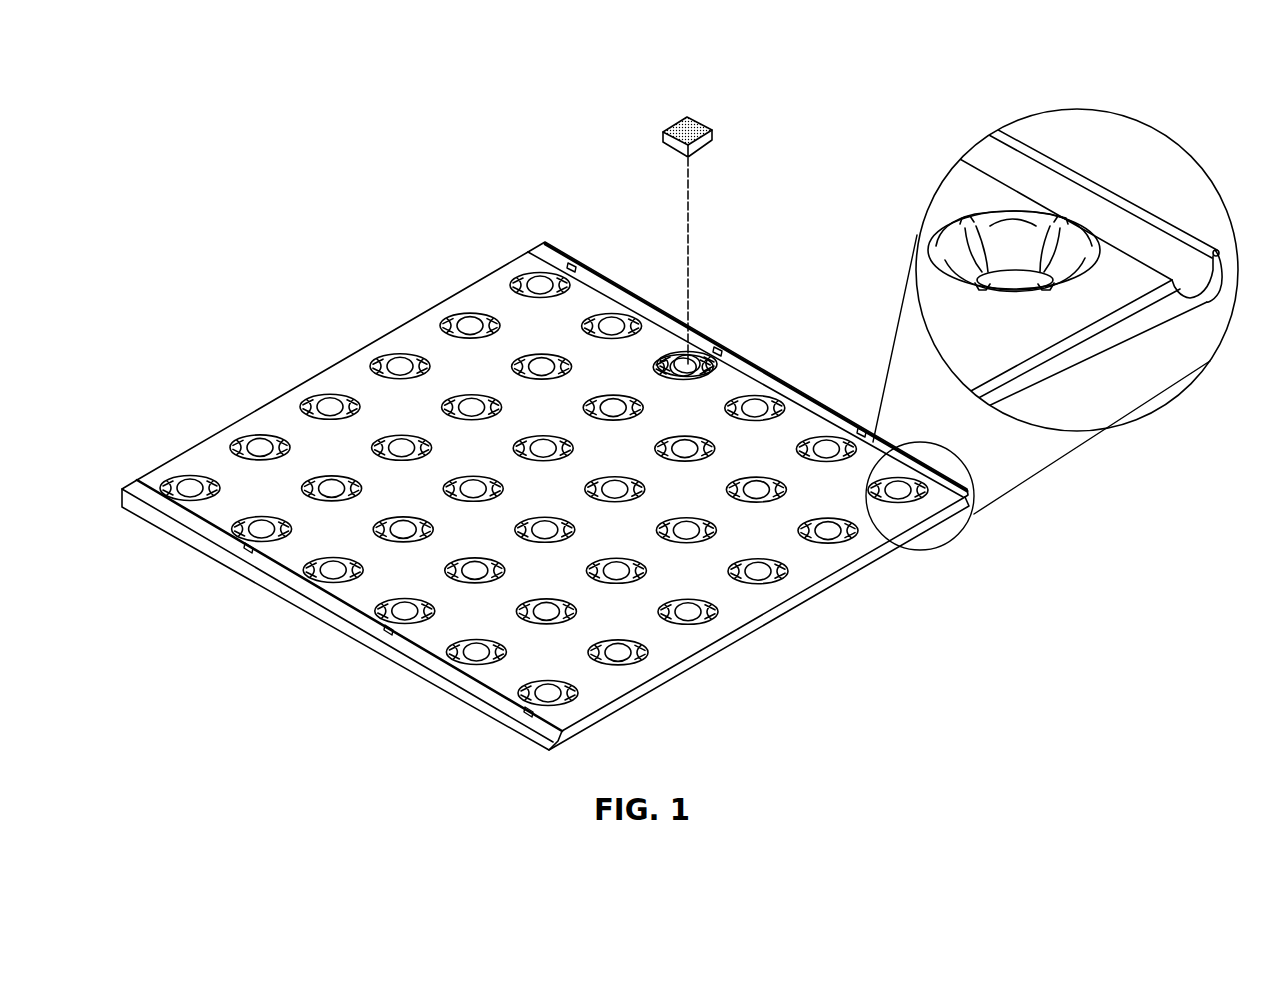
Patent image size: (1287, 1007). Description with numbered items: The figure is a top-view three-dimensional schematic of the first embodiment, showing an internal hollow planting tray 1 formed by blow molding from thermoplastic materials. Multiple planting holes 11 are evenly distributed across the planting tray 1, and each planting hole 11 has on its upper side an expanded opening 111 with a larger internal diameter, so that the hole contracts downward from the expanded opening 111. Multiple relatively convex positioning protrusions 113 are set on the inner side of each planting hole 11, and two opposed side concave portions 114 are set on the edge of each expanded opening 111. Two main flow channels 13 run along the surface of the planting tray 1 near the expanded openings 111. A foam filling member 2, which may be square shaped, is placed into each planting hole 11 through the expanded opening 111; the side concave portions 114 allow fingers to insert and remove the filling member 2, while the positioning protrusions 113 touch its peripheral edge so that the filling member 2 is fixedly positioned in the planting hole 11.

The planting tray 1 is at (357, 372).
The filling member 2 is at (665, 142).
The planting hole 11 is at (693, 356).
The main flow channel 13 is at (792, 402).
The expanded opening 111 is at (1002, 205).
The positioning protrusion 113 is at (1028, 268).
The side concave portion 114 is at (946, 248).